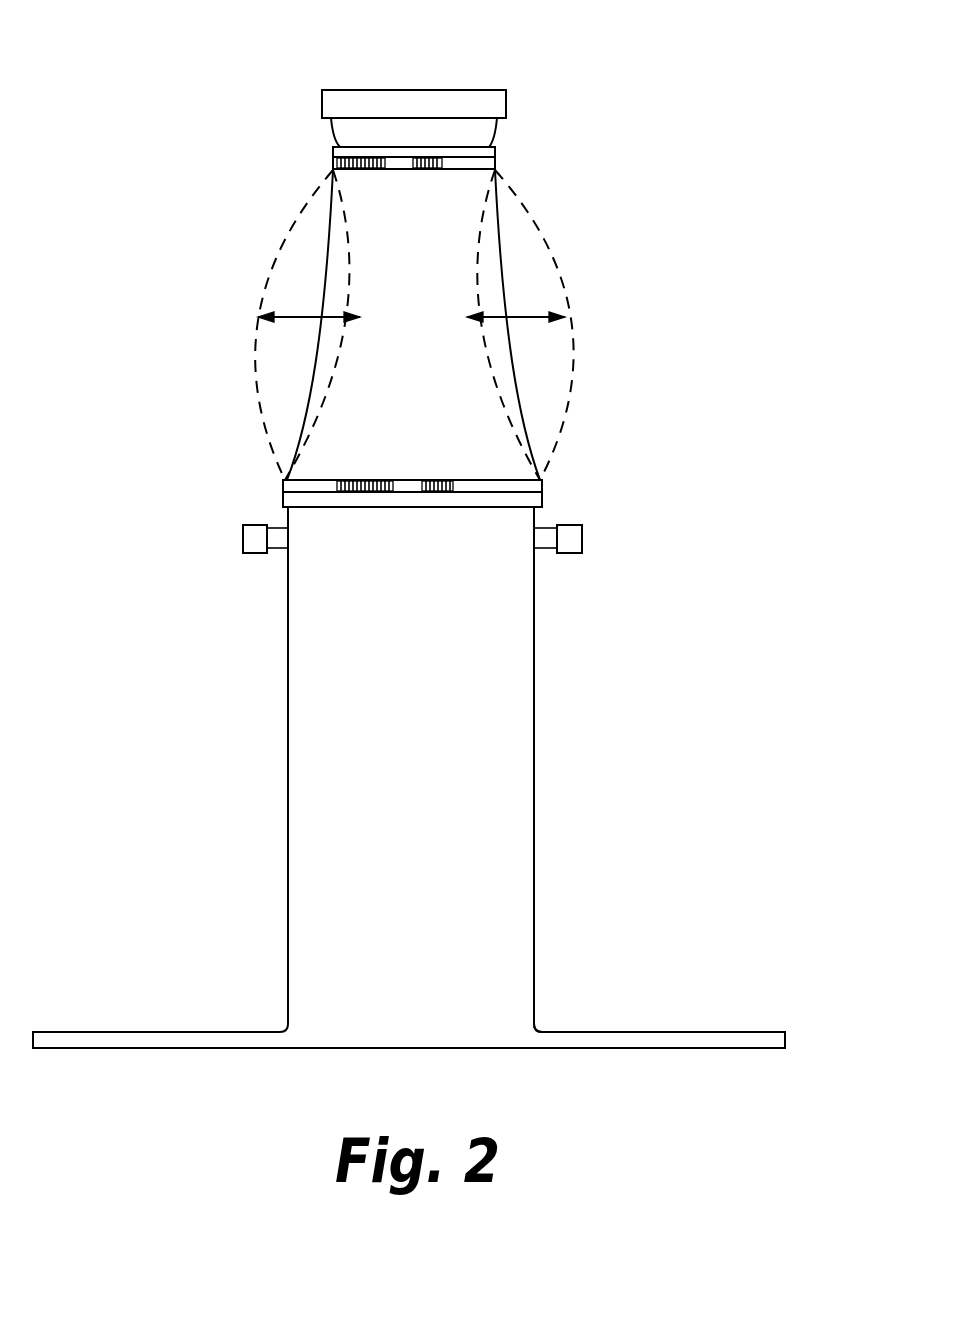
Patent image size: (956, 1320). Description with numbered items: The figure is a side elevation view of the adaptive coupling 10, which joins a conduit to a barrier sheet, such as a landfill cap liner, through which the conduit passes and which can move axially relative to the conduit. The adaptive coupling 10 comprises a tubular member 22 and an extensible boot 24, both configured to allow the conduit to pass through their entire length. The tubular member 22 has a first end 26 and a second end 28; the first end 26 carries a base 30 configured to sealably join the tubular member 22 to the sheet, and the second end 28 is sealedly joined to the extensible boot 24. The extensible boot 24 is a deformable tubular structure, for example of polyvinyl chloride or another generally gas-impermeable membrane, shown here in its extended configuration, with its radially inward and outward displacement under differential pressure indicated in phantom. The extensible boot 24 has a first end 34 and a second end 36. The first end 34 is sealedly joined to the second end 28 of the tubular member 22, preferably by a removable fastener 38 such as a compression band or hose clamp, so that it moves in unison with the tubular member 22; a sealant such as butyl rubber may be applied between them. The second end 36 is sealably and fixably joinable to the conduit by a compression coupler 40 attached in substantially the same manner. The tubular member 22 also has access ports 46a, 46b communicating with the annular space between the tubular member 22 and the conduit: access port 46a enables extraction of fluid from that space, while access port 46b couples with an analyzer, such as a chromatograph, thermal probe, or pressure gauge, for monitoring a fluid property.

The adaptive coupling 10 is at (568, 688).
The tubular member 22 is at (537, 830).
The extensible boot 24 is at (527, 282).
The first end 26 is at (533, 1020).
The second end 28 is at (550, 518).
The base 30 is at (718, 1032).
The first end 34 is at (543, 498).
The second end 36 is at (495, 153).
The removable fastener 38 is at (333, 165).
The compression coupler 40 is at (335, 102).
The access port 46a is at (583, 540).
The access port 46b is at (242, 540).